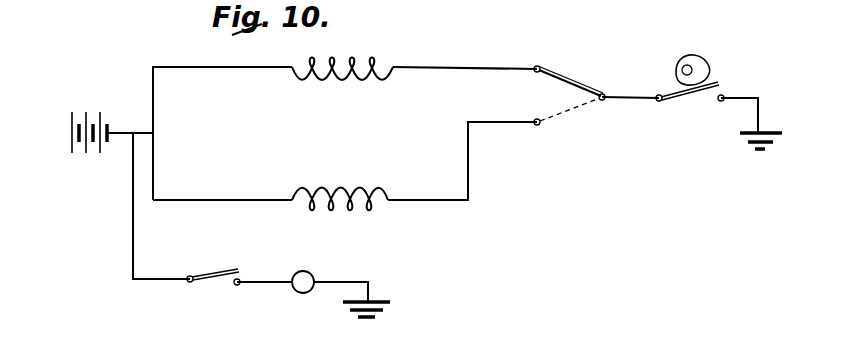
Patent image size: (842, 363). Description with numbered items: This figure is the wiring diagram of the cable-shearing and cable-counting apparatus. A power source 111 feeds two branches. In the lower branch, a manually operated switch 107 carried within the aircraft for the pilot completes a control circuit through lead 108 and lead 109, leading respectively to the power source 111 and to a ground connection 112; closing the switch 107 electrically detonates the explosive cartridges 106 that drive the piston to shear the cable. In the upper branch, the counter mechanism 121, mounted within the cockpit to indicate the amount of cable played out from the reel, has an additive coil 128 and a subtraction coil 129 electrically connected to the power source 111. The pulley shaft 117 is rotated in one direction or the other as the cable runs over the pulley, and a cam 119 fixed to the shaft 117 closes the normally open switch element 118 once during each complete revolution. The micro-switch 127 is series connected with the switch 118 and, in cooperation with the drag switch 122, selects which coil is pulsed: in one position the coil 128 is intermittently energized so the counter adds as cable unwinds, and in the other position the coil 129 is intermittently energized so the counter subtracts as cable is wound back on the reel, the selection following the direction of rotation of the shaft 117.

The power source 111 is at (72, 153).
The counter mechanism 121 is at (377, 58).
The coil 128 is at (299, 54).
The coil 129 is at (318, 212).
The drag switch 122 is at (560, 80).
The micro-switch 127 is at (588, 91).
The pulley shaft 117 is at (684, 66).
The cam 119 is at (710, 70).
The switch element 118 is at (672, 103).
The switch 107 is at (217, 260).
The lead 108 is at (238, 286).
The explosive cartridges 106 is at (303, 293).
The lead 109 is at (332, 278).
The ground connection 112 is at (378, 310).